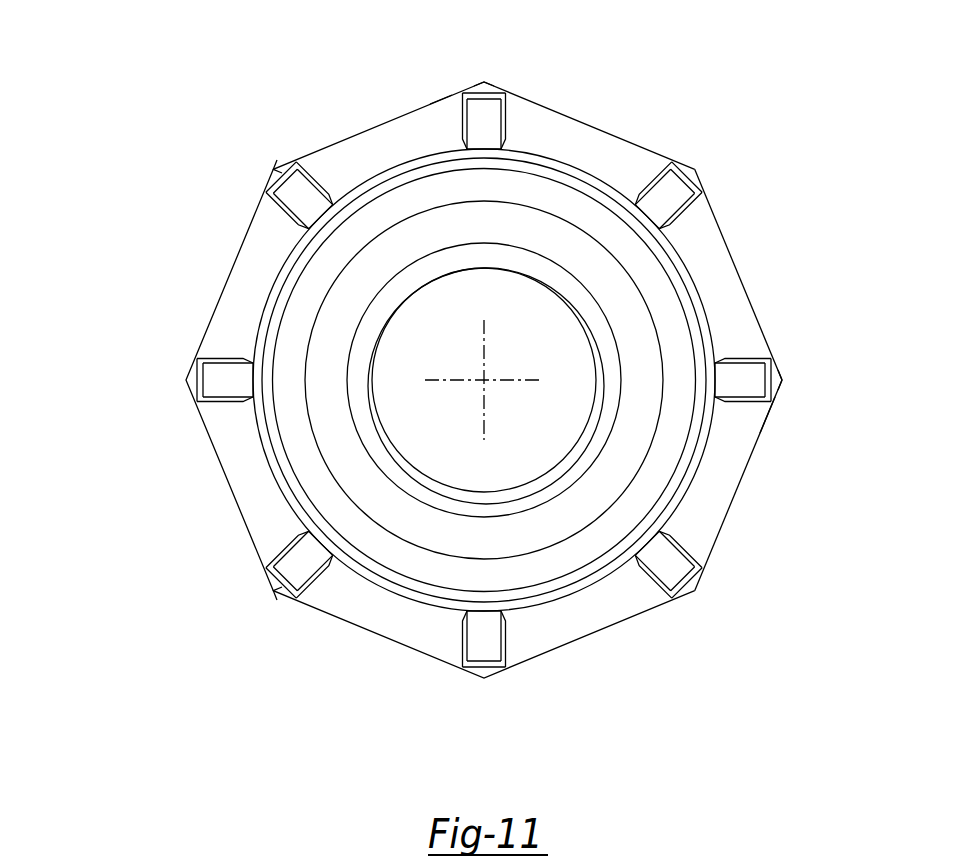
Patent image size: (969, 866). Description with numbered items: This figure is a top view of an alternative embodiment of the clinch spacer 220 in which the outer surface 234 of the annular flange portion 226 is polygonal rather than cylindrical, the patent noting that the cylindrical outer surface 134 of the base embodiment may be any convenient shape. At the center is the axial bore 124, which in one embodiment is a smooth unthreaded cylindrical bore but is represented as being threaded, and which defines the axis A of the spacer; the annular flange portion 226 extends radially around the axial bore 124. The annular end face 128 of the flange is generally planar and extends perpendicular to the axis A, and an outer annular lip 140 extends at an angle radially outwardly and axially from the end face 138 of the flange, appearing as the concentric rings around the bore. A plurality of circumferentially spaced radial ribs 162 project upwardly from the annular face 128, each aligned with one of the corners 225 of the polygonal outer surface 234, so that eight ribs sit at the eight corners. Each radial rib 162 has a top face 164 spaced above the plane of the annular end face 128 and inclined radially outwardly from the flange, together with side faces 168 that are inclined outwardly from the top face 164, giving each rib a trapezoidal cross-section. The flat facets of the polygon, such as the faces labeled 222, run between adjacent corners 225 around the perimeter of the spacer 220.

The clinch spacer 220 is at (482, 353).
The first side wall 222 is at (603, 125).
The annular flange portion 226 is at (752, 474).
The outer surface 234 is at (768, 422).
The corners 225 is at (484, 80).
The outer surface 134 is at (441, 97).
The annular end face 128 is at (705, 258).
The outer annular lip 140 is at (275, 270).
The axial bore 124 is at (558, 288).
The end face 138 is at (328, 360).
The axis A is at (484, 380).
The radial ribs 162 is at (426, 413).
The top face 164 is at (480, 120).
The side faces 168 is at (318, 180).